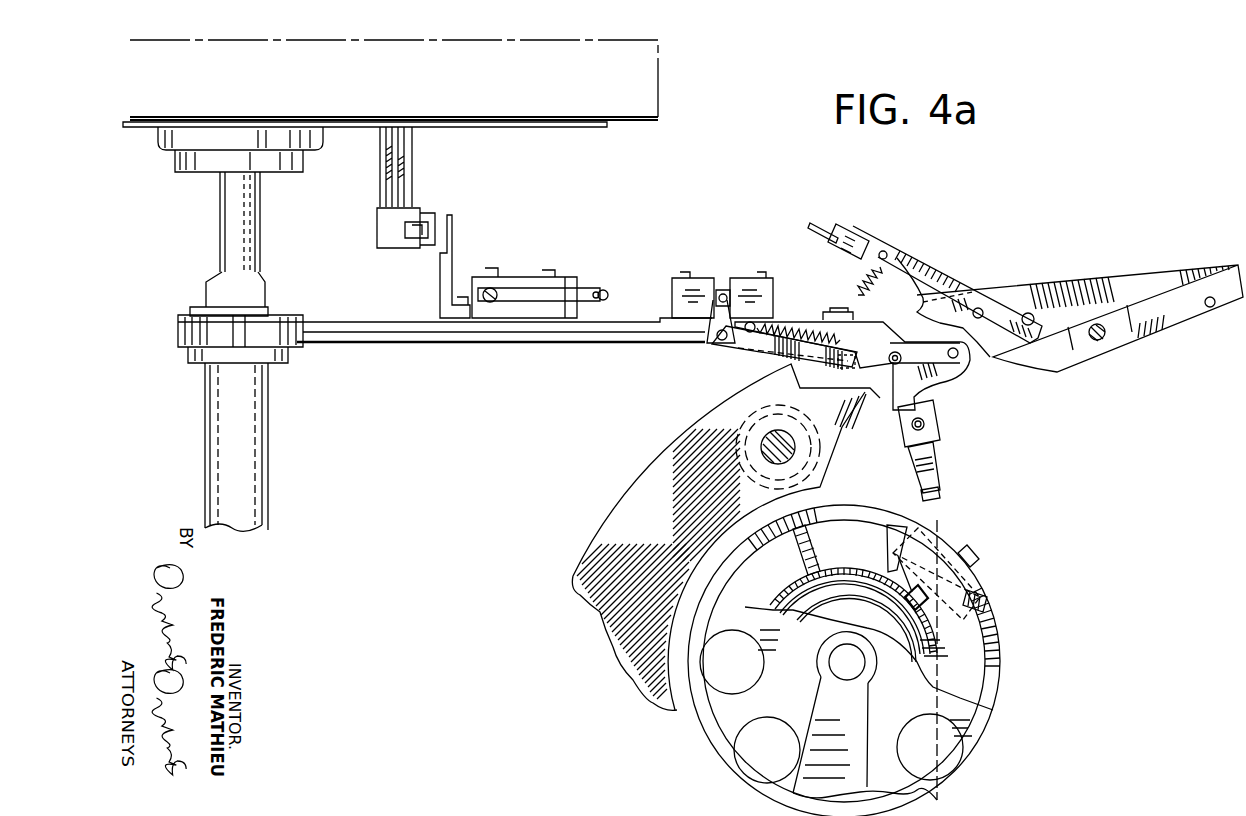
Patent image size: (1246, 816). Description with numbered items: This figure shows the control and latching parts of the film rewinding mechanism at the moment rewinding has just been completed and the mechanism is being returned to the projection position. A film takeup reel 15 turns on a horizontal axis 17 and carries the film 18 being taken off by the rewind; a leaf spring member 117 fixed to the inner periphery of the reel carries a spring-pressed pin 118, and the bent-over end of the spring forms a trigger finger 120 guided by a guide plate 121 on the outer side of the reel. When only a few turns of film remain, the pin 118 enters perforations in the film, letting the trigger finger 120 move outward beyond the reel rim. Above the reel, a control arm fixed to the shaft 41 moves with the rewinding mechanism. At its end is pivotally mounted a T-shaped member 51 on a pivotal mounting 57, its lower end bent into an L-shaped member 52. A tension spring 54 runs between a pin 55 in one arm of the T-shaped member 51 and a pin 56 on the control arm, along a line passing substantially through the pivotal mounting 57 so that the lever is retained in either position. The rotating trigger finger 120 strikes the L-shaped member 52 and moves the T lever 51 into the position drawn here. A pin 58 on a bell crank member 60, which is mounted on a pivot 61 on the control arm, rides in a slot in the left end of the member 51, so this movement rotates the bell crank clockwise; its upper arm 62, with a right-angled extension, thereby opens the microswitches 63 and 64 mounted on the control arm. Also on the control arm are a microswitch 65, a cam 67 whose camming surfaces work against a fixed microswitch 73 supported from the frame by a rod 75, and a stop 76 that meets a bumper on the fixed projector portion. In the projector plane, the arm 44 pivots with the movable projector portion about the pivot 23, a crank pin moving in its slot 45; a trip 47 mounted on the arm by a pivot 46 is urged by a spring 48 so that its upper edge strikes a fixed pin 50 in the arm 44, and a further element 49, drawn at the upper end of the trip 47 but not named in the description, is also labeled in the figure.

The film takeup reel 15 is at (1000, 680).
The horizontal axis 17 is at (858, 664).
The film 18 is at (945, 748).
The pivot 23 is at (763, 441).
The shaft 41 is at (250, 405).
The arm 44 is at (1146, 278).
The slot 45 is at (1212, 307).
The pivot 46 is at (978, 307).
The trip 47 is at (940, 282).
The spring 48 is at (858, 285).
The rod 49 is at (818, 224).
The fixed pin 50 is at (1040, 308).
The T-shaped member 51 is at (930, 388).
The L-shaped member 52 is at (932, 490).
The tension spring 54 is at (840, 338).
The pin 55 is at (960, 358).
The pin 56 is at (757, 325).
The pivotal mounting 57 is at (893, 365).
The pin 58 is at (845, 366).
The bell crank member 60 is at (738, 348).
The pivot 61 is at (705, 344).
The upper arm 62 is at (727, 288).
The microswitch 63 is at (702, 285).
The microswitch 64 is at (756, 290).
The microswitch 65 is at (516, 284).
The cam 67 is at (452, 240).
The microswitch 73 is at (388, 244).
The rod 75 is at (406, 150).
The stop 76 is at (848, 315).
The leaf spring member 117 is at (823, 582).
The pin 118 is at (928, 593).
The trigger finger 120 is at (1006, 546).
The guide plate 121 is at (925, 540).